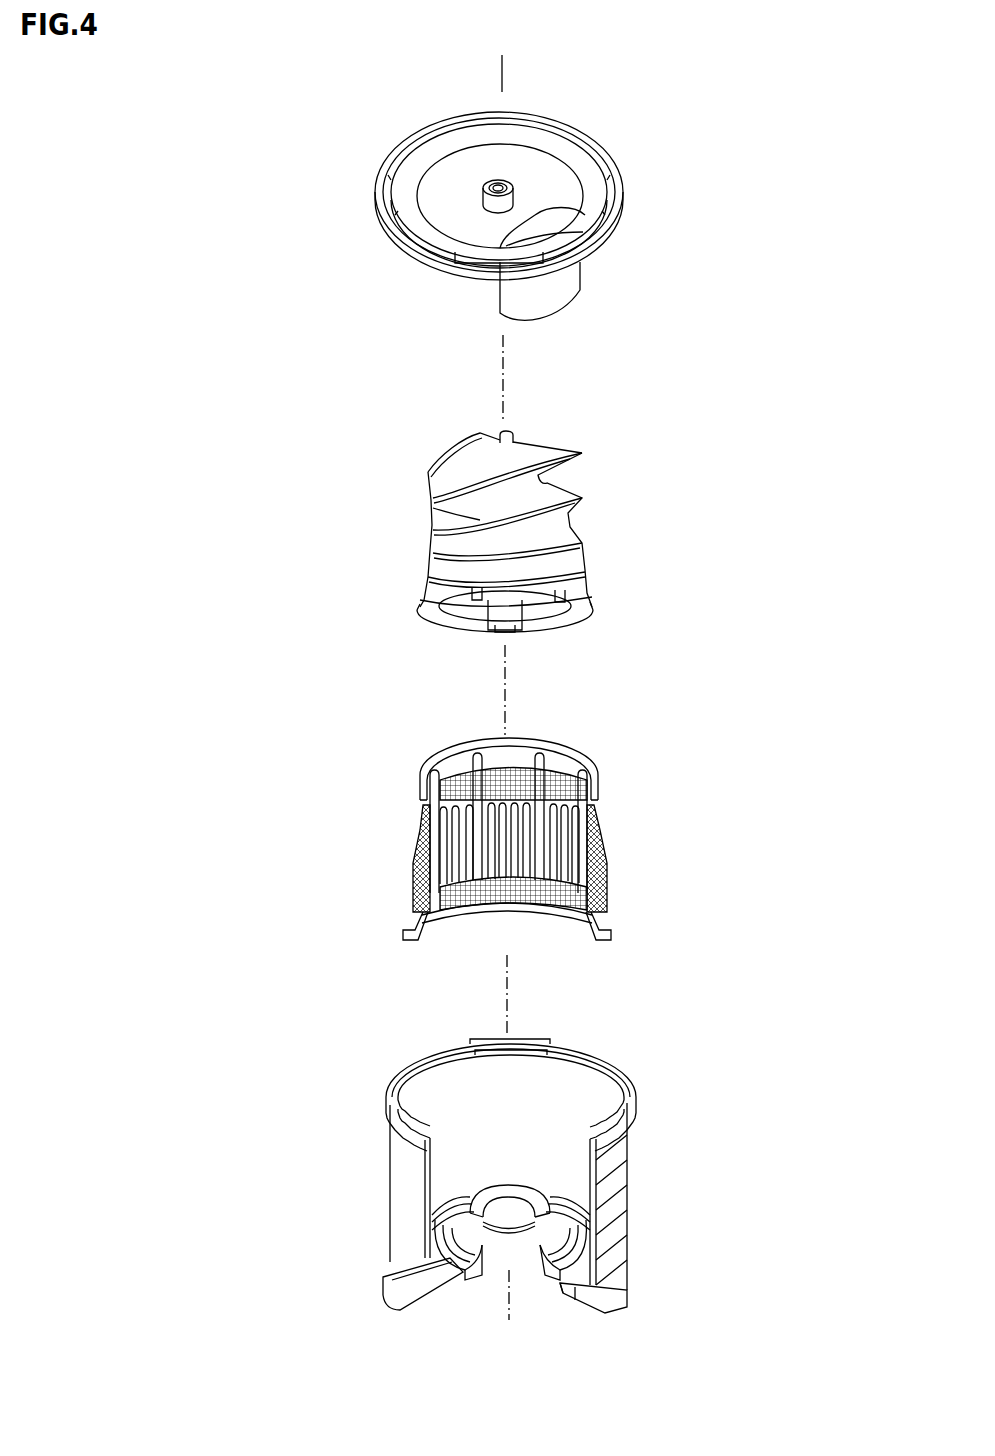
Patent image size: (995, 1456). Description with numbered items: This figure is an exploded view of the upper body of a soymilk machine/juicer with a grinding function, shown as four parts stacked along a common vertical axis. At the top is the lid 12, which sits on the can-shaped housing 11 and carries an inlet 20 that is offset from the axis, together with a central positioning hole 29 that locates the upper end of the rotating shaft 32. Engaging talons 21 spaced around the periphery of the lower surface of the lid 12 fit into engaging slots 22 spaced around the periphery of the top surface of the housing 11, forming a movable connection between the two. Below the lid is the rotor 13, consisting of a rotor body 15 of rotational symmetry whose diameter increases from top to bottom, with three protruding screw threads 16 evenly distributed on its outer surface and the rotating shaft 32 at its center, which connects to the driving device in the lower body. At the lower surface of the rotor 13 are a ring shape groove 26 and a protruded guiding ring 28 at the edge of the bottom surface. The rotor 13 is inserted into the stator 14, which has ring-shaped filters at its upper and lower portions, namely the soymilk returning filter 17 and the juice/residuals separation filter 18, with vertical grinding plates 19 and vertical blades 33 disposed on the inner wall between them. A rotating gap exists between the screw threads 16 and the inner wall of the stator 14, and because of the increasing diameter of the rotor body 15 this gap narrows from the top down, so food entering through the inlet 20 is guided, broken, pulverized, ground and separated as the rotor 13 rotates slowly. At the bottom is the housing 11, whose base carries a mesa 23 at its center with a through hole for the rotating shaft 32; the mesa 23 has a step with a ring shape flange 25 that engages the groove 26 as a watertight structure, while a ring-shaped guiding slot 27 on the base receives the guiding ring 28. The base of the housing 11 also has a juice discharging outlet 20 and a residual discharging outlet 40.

The housing 11 is at (502, 1145).
The lid 12 is at (475, 166).
The rotor 13 is at (490, 501).
The stator 14 is at (499, 808).
The rotor body 15 is at (448, 525).
The screw threads 16 is at (537, 477).
The soymilk returning filter 17 is at (430, 795).
The juice/residuals separation filter 18 is at (457, 902).
The grinding plates 19 is at (457, 847).
The inlet 20 is at (547, 227).
The engaging talons 21 is at (380, 222).
The engaging slots 22 is at (412, 1062).
The mesa 23 is at (547, 1210).
The ring shape flange 25 is at (592, 1215).
The ring shape groove 26 is at (553, 597).
The guiding slot 27 is at (577, 1277).
The guiding ring 28 is at (560, 630).
The positioning hole 29 is at (517, 187).
The rotating shaft 32 is at (512, 438).
The vertical blades 33 is at (593, 793).
The residual discharging outlet 40 is at (600, 1282).